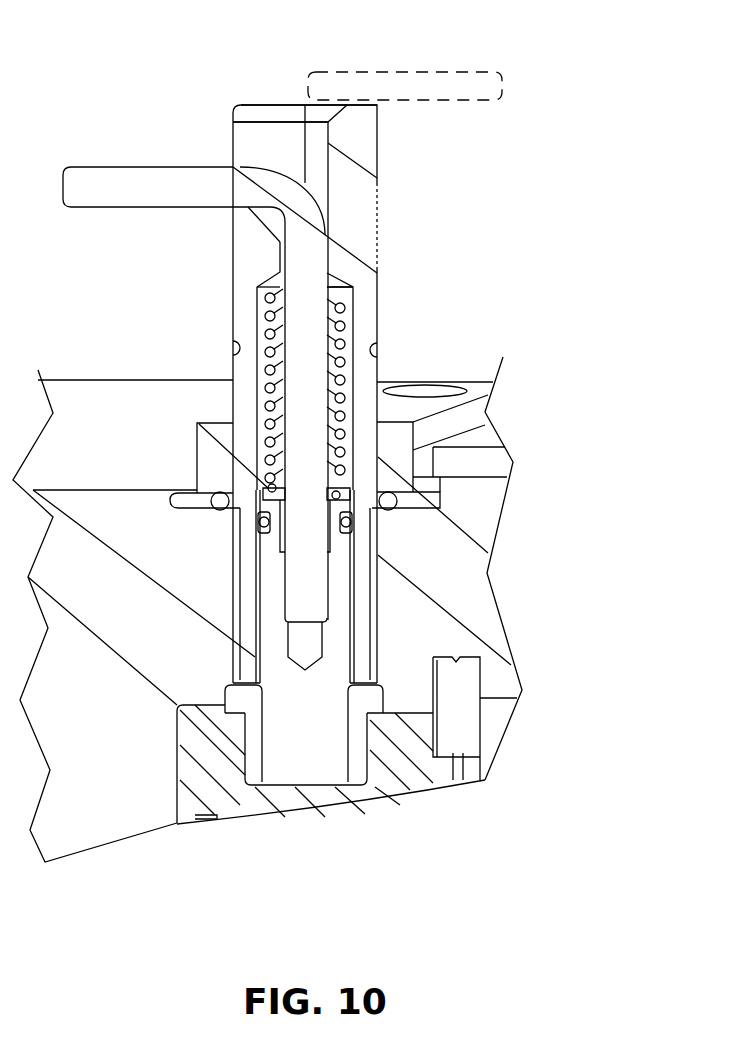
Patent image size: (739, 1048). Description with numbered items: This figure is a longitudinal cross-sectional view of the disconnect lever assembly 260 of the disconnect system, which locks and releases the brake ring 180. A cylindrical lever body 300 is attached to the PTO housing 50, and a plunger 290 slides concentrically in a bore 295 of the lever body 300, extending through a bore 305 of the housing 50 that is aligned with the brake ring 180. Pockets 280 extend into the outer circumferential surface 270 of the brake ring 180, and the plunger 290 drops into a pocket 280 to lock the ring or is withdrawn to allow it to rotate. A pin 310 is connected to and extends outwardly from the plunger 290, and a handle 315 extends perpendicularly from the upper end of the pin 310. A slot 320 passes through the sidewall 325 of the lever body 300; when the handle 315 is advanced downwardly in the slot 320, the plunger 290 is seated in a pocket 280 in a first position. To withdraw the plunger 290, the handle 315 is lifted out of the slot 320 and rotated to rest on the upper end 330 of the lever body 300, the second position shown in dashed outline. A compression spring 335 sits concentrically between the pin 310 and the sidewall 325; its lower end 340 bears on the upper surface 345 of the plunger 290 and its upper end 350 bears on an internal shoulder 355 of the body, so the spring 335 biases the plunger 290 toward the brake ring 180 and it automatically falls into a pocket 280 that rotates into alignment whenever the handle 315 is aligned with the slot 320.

The PTO housing 50 is at (482, 496).
The brake ring 180 is at (395, 784).
The disconnect lever assembly 260 is at (550, 236).
The outer circumferential surface 270 is at (400, 707).
The pocket 280 is at (237, 765).
The plunger 290 is at (275, 737).
The bore 295 is at (247, 402).
The cylindrical lever body 300 is at (226, 306).
The bore 305 is at (377, 627).
The pin 310 is at (303, 562).
The handle 315 is at (142, 177).
The slot 320 is at (255, 148).
The sidewall 325 is at (248, 238).
The upper end 330 is at (373, 103).
The spring 335 is at (350, 391).
The lower end 340 is at (352, 446).
The upper surface 345 is at (266, 488).
The upper end 350 is at (350, 317).
The internal shoulder 355 is at (357, 302).